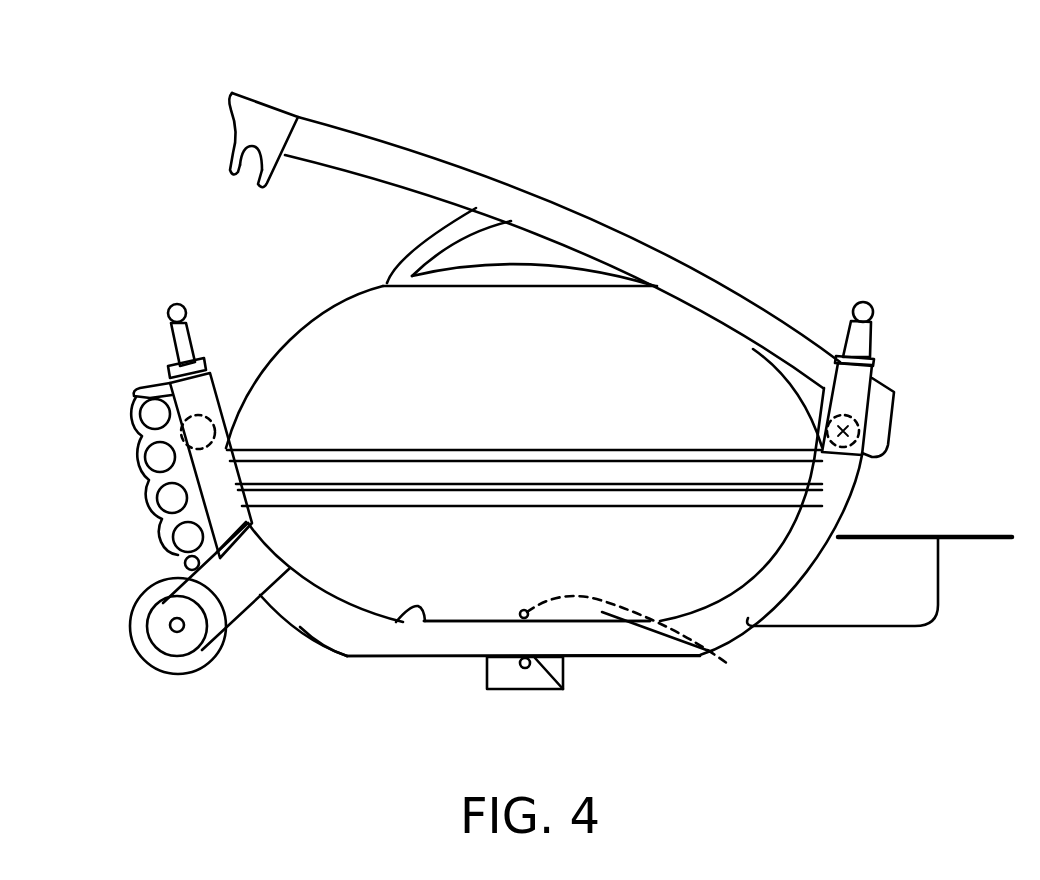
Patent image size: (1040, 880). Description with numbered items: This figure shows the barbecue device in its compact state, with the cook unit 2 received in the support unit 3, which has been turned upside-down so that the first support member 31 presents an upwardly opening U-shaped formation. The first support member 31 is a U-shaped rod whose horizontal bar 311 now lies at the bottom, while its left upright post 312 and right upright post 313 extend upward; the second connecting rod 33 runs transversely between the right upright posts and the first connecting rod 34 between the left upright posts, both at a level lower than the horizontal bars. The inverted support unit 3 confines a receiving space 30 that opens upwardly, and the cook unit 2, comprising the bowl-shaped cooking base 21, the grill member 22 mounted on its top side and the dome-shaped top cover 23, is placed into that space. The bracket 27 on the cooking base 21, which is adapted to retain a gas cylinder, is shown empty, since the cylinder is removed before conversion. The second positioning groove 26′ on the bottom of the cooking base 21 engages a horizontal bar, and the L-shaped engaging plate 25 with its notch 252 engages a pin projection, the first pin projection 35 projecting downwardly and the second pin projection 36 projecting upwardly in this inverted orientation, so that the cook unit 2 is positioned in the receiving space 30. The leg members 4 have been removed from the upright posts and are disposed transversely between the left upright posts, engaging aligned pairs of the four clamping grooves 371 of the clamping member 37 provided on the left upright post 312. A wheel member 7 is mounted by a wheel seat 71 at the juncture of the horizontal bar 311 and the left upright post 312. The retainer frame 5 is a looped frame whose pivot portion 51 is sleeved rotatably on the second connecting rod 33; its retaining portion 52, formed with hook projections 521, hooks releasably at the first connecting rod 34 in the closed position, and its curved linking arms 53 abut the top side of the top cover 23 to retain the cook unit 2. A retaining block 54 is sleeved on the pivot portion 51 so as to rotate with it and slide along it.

The cook unit 2 is at (598, 310).
The support unit 3 is at (722, 704).
The upright leg members 4 is at (160, 459).
The retainer frame 5 is at (730, 308).
The wheel members 7 is at (177, 660).
The cooking base 21 is at (402, 585).
The grill member 22 is at (297, 480).
The top cover 23 is at (343, 347).
The engaging plate 25 is at (551, 690).
The second positioning groove 26′ is at (418, 607).
The bracket 27 is at (883, 560).
The receiving space 30 is at (608, 612).
The first support member 31 is at (807, 560).
The second connecting rod 33 is at (857, 460).
The first connecting rod 34 is at (216, 400).
The first pin projection 35 is at (523, 668).
The second pin projection 36 is at (645, 639).
The clamping member 37 is at (167, 390).
The pivot portion 51 is at (883, 388).
The retaining portion 52 is at (268, 100).
The curved linking arms 53 is at (427, 161).
The retaining block 54 is at (883, 440).
The wheel seat 71 is at (210, 613).
The notch 252 is at (545, 687).
The horizontal bar 311 is at (450, 643).
The left upright post 312 is at (215, 495).
The right upright post 313 is at (846, 394).
The clamping grooves 371 is at (137, 392).
The hook projections 521 is at (228, 156).